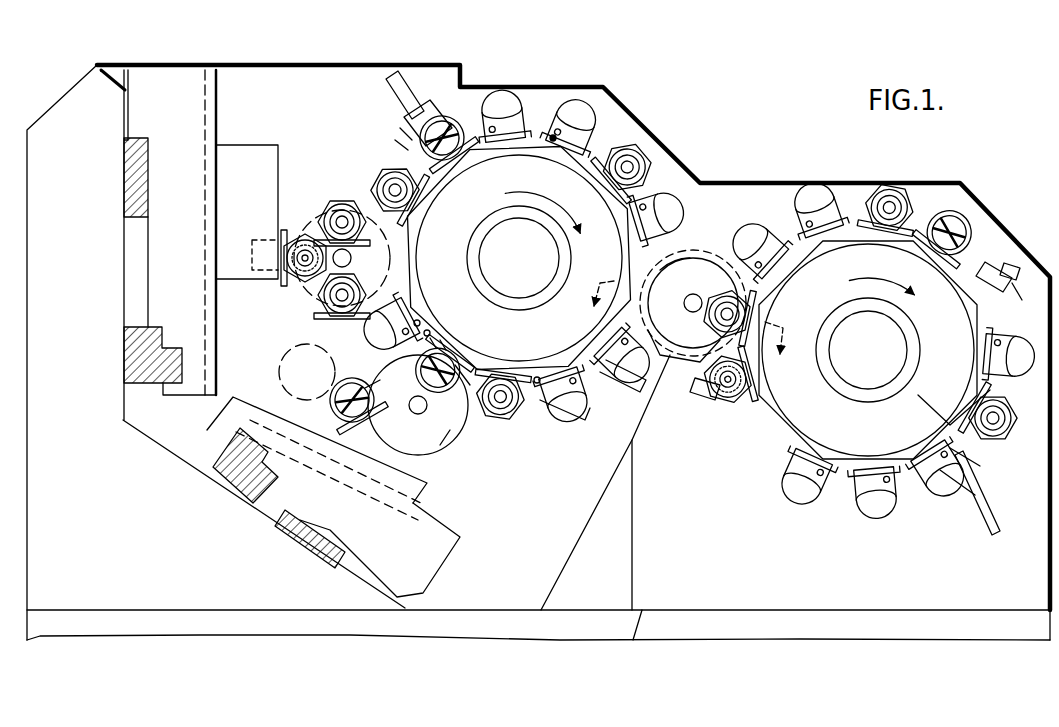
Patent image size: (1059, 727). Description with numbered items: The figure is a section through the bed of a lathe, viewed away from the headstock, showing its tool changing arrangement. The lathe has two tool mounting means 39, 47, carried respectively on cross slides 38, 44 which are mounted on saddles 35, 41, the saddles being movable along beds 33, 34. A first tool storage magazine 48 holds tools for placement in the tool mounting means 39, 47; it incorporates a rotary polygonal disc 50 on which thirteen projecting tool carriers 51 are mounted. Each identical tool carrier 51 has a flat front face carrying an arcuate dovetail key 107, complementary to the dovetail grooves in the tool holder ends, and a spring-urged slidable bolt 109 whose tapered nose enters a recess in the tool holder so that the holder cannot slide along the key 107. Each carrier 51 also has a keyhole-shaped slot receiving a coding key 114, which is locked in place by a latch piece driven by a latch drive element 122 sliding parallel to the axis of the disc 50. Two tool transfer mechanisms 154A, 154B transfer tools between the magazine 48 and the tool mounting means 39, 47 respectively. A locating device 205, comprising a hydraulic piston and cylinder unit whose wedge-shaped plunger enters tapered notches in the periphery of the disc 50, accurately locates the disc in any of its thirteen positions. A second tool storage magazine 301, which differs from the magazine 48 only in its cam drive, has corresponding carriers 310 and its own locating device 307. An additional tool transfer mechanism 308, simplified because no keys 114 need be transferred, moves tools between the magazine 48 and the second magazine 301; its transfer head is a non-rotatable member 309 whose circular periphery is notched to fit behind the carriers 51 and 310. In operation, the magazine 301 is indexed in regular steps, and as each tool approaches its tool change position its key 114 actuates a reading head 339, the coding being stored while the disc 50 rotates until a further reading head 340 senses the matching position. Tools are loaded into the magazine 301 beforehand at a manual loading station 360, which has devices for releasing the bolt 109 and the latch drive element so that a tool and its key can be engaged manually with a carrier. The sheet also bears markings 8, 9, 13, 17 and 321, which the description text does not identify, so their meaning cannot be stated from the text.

The first drum 8 is at (380, 52).
The carrier cups 9 is at (567, 100).
The direction of rotation 13 is at (698, 302).
The discharge cups 17 is at (828, 432).
The bed 33 is at (138, 274).
The bed 34 is at (278, 507).
The saddle 35 is at (185, 333).
The cross slide 38 is at (230, 267).
The tool mounting means 39 is at (286, 235).
The saddle 41 is at (428, 554).
The cross slide 44 is at (383, 470).
The tool mounting means 47 is at (328, 407).
The first tool storage magazine 48 is at (537, 392).
The rotary polygonal disc 50 is at (585, 395).
The tool carriers 51 is at (380, 329).
The arcuate dovetail key 107 is at (563, 415).
The slidable bolt 109 is at (556, 137).
The key 114 is at (528, 398).
The latch drive element 122 is at (432, 334).
The tool transfer mechanism 154A is at (313, 228).
The tool transfer mechanism 154B is at (437, 427).
The locating device 205 is at (440, 94).
The second tool storage magazine 301 is at (929, 394).
The locating device 307 is at (986, 489).
The tool transfer mechanism 308 is at (722, 262).
The non-rotatable member 309 is at (661, 345).
The carriers 310 is at (709, 205).
The intermediate gear 321 is at (712, 270).
The reading head 339 is at (698, 408).
The reading head 340 is at (684, 200).
The manual loading station 360 is at (1018, 264).